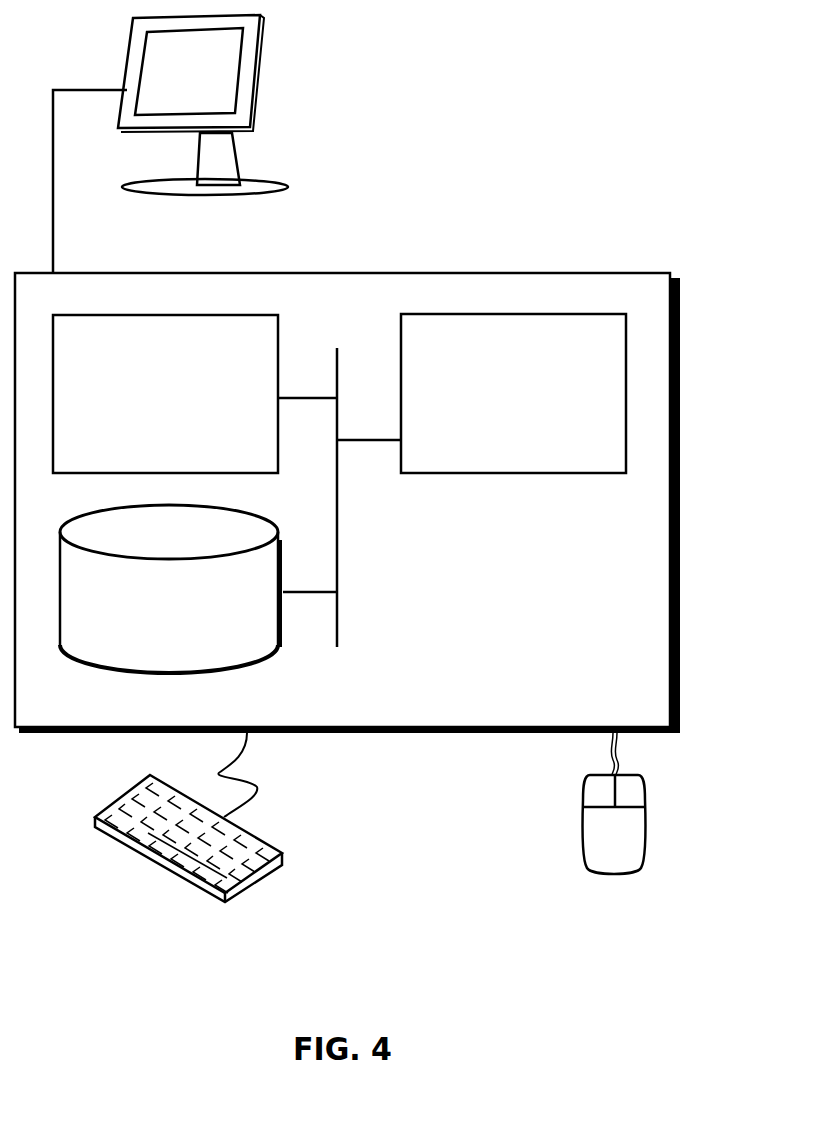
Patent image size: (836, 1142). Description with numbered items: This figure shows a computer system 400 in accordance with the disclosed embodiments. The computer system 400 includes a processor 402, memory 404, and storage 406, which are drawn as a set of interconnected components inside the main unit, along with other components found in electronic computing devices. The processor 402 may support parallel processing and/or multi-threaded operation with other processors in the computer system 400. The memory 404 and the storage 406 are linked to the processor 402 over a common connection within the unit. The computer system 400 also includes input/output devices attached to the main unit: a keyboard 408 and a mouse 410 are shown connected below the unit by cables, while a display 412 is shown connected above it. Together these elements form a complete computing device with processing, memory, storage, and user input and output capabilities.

The computer system 400 is at (390, 240).
The processor 402 is at (537, 407).
The memory 404 is at (187, 405).
The storage 406 is at (190, 617).
The keyboard 408 is at (112, 833).
The mouse 410 is at (634, 848).
The display 412 is at (170, 144).